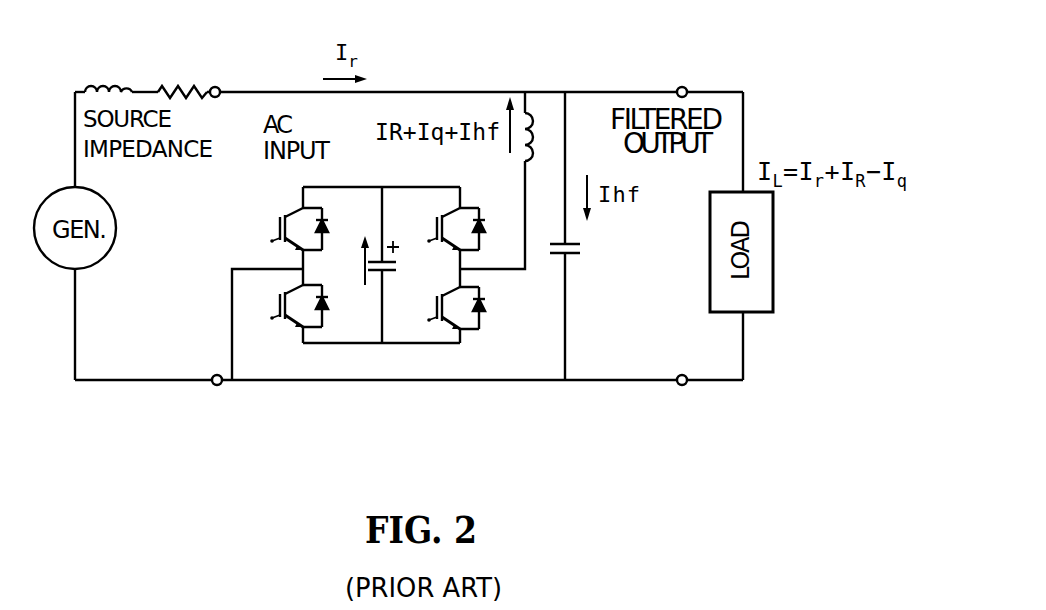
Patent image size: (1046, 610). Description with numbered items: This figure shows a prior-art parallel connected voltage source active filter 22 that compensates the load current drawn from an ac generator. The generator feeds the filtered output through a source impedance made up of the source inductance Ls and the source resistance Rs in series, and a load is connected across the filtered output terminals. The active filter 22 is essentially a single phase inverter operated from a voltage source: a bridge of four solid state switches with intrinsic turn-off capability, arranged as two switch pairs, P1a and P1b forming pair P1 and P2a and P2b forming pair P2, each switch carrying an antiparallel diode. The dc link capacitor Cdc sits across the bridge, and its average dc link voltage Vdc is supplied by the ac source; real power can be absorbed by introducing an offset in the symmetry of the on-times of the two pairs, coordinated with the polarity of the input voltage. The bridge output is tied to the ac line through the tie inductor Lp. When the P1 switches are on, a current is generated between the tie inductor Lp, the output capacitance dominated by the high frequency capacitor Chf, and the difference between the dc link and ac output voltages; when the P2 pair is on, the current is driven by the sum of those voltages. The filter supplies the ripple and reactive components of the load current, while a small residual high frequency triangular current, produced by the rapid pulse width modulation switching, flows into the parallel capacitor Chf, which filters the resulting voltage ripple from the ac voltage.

The parallel connected voltage source active filter 22 is at (349, 182).
The source inductance Ls is at (108, 74).
The source resistance Rs is at (182, 77).
The tie inductor Lp is at (542, 137).
The high frequency capacitor Chf is at (587, 236).
The dc link capacitor Cdc is at (404, 265).
The dc link voltage Vdc is at (343, 260).
The switch P1a is at (280, 229).
The switch P2b is at (290, 315).
The switch P2a is at (468, 216).
The switch P1b is at (481, 308).